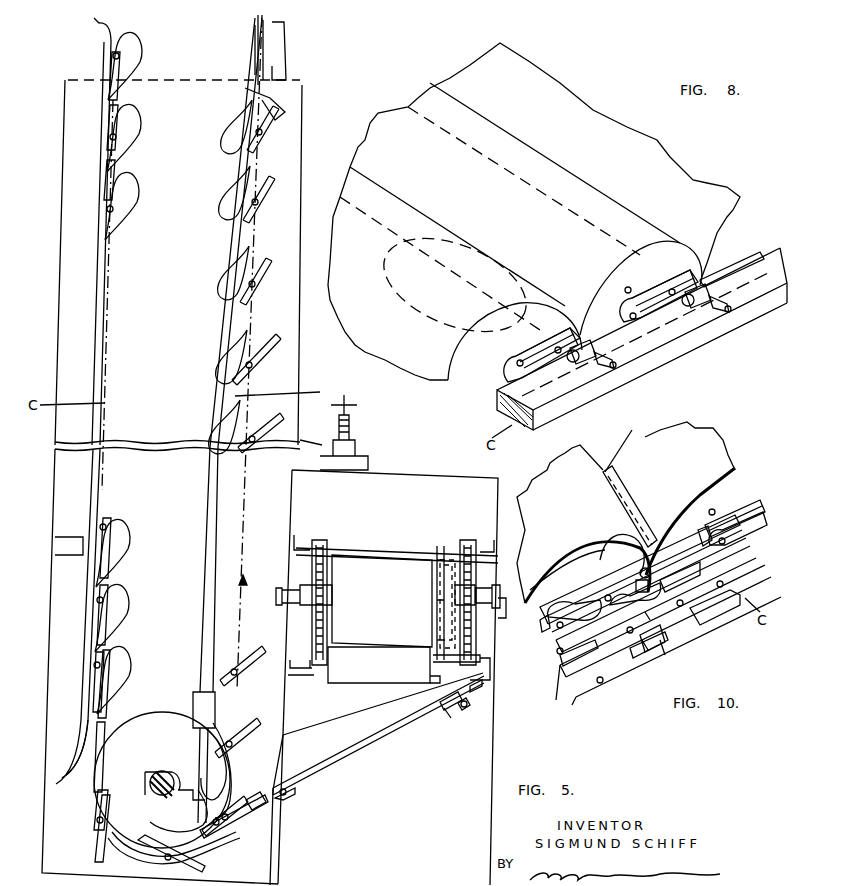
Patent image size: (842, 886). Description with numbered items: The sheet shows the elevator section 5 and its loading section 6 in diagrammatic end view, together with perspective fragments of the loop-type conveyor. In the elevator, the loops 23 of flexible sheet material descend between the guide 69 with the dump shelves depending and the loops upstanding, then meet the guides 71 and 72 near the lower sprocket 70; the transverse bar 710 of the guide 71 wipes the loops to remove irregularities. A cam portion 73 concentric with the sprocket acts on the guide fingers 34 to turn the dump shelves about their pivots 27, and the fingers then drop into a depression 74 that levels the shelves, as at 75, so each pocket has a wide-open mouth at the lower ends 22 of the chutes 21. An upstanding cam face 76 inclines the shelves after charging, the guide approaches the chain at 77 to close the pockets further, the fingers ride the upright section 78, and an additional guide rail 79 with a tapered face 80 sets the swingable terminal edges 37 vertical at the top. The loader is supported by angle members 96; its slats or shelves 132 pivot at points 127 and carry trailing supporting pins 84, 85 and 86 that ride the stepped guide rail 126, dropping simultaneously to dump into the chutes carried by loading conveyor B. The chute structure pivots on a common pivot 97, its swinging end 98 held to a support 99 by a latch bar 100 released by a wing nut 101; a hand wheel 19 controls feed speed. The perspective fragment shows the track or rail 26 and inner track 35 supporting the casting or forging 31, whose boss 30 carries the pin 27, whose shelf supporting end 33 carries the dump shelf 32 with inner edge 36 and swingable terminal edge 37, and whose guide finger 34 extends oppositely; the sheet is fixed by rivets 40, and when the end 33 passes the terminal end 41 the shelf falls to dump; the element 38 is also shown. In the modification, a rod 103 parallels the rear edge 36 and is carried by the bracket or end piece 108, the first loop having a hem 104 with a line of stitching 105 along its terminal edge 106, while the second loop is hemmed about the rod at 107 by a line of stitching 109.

In FIG. 5, the elevator section 5 is at (58, 363).
In FIG. 5, the loading section 6 is at (495, 763).
In FIG. 5, the hand wheel 19 is at (338, 410).
In FIG. 5, the chute 21 is at (322, 752).
In FIG. 5, the lower end of chute 22 is at (261, 803).
In FIG. 5, the loop or pocket 23 is at (140, 49).
In FIG. 8, the loop or pocket 23 is at (412, 348).
In FIG. 10, the loop or pocket 23 is at (562, 485).
In FIG. 8, the track or rail 26 is at (570, 412).
In FIG. 5, the pin 27 is at (97, 822).
In FIG. 8, the pin 27 is at (615, 352).
In FIG. 10, the pin 27 is at (662, 652).
In FIG. 8, the boss 30 is at (692, 310).
In FIG. 8, the casting or forging 31 is at (672, 310).
In FIG. 8, the dump shelf 32 is at (652, 298).
In FIG. 10, the dump shelf 32 is at (735, 518).
In FIG. 8, the shelf supporting end 33 is at (645, 320).
In FIG. 5, the guide finger 34 is at (108, 800).
In FIG. 8, the guide finger 34 is at (726, 272).
In FIG. 8, the inner track 35 is at (503, 405).
In FIG. 8, the inner edge 36 is at (567, 345).
In FIG. 10, the inner edge 36 is at (600, 560).
In FIG. 5, the swingable terminal edge 37 is at (108, 104).
In FIG. 8, the swingable terminal edge 37 is at (505, 370).
In FIG. 10, the swingable terminal edge 37 is at (712, 538).
In FIG. 8, the recess 38 is at (487, 330).
In FIG. 8, the rivets 40 is at (625, 288).
In FIG. 10, the rivets 40 is at (718, 510).
In FIG. 8, the terminal end of track 41 is at (760, 262).
In FIG. 5, the guide 69 is at (106, 64).
In FIG. 5, the lower sprocket 70 is at (158, 712).
In FIG. 5, the guide 71 is at (106, 712).
In FIG. 5, the guide 72 is at (78, 703).
In FIG. 5, the cam portion 73 is at (128, 850).
In FIG. 5, the depression 74 is at (190, 840).
In FIG. 5, the leveled dump shelf position 75 is at (238, 822).
In FIG. 5, the upstanding cam face 76 is at (212, 790).
In FIG. 5, the guide approach point 77 is at (235, 396).
In FIG. 5, the upright section 78 is at (255, 138).
In FIG. 5, the additional guide rail 79 is at (258, 84).
In FIG. 5, the tapered face 80 is at (268, 97).
In FIG. 5, the supporting pin 84 is at (447, 546).
In FIG. 5, the supporting pin 85 is at (388, 601).
In FIG. 5, the supporting pin 86 is at (434, 683).
In FIG. 5, the angle members 96 is at (296, 540).
In FIG. 5, the common pivot 97 is at (287, 795).
In FIG. 5, the swinging end of chute structure 98 is at (448, 720).
In FIG. 5, the support 99 is at (478, 688).
In FIG. 5, the latch bar 100 is at (456, 705).
In FIG. 5, the wing nut 101 is at (468, 708).
In FIG. 10, the rod 103 is at (650, 586).
In FIG. 5, the hem 104 is at (516, 614).
In FIG. 10, the line of stitching 105 is at (617, 548).
In FIG. 10, the terminal edge 106 is at (622, 552).
In FIG. 10, the hem 107 is at (648, 572).
In FIG. 10, the bracket or end piece 108 is at (730, 538).
In FIG. 10, the line of stitching 109 is at (622, 492).
In FIG. 5, the guide rail 126 is at (456, 669).
In FIG. 5, the pivot point 127 is at (319, 545).
In FIG. 5, the slat or shelf 132 is at (372, 678).
In FIG. 5, the transverse bar 710 is at (96, 730).
In FIG. 5, the loading conveyor B is at (324, 548).